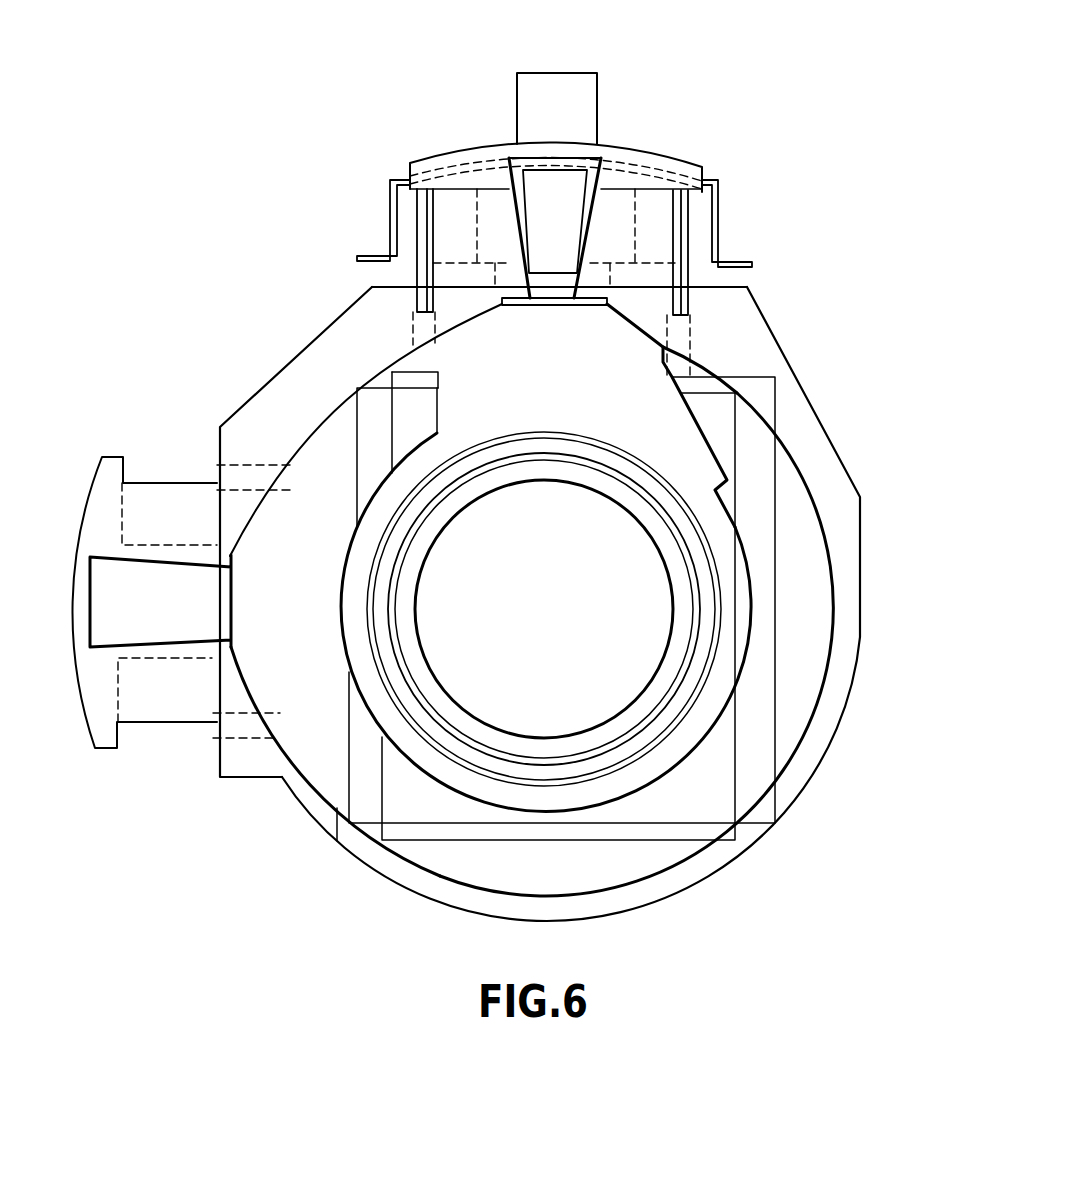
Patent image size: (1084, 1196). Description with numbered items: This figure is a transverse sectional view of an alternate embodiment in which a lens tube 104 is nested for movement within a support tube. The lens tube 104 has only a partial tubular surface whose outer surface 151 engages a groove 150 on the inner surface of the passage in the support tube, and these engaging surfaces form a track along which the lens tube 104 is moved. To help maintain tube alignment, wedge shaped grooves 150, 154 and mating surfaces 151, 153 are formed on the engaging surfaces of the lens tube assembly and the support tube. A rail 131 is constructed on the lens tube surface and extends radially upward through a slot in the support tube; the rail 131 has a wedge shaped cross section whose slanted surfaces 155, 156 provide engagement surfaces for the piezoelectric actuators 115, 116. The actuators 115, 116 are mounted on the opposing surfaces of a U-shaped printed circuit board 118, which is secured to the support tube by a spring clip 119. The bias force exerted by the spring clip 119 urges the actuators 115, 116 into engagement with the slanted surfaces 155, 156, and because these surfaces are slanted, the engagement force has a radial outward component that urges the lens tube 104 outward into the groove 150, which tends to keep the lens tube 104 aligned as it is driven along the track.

The lens tube 104 is at (688, 368).
The piezoelectric actuator 115 is at (470, 194).
The piezoelectric actuator 116 is at (650, 193).
The printed circuit board 118 is at (428, 214).
The spring clip 119 is at (720, 193).
The rail 131 is at (557, 178).
The groove 150 is at (633, 323).
The outer surface 151 is at (520, 306).
The mating surface 153 is at (233, 583).
The wedge shaped groove 154 is at (243, 669).
The slanted surface 155 is at (525, 237).
The slanted surface 156 is at (583, 247).